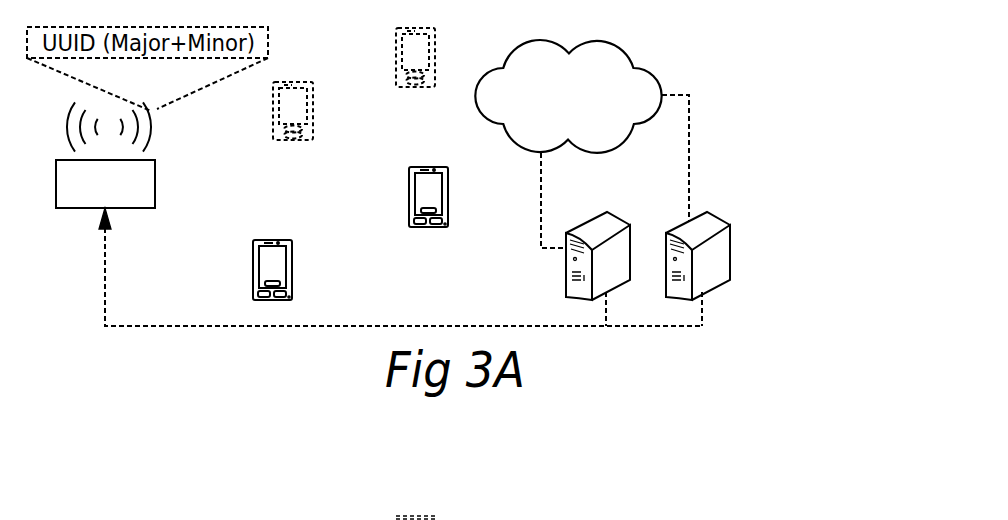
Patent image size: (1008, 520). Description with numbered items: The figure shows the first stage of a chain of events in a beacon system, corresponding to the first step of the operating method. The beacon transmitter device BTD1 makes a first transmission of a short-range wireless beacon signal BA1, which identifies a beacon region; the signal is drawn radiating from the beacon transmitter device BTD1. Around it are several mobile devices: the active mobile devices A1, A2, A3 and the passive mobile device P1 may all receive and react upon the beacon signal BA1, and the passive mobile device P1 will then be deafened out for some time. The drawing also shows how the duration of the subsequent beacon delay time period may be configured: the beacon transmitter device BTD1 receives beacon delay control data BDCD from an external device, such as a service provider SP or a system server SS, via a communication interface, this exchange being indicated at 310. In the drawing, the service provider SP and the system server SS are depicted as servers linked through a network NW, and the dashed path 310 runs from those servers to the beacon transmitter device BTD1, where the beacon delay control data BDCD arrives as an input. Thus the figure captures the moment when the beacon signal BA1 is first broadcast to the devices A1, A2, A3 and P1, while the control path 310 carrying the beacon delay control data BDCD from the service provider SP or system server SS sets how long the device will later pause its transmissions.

The short-range wireless beacon signal BA1 is at (147, 138).
The beacon transmitter device BTD1 is at (105, 184).
The beacon delay control data BDCD is at (400, 267).
The active mobile device A1 is at (280, 106).
The active mobile device A2 is at (418, 191).
The active mobile device A3 is at (403, 52).
The passive mobile device P1 is at (262, 264).
The network NW is at (588, 108).
The service provider SP is at (567, 266).
The system server SS is at (724, 262).
The reception of beacon delay control data 310 is at (262, 327).